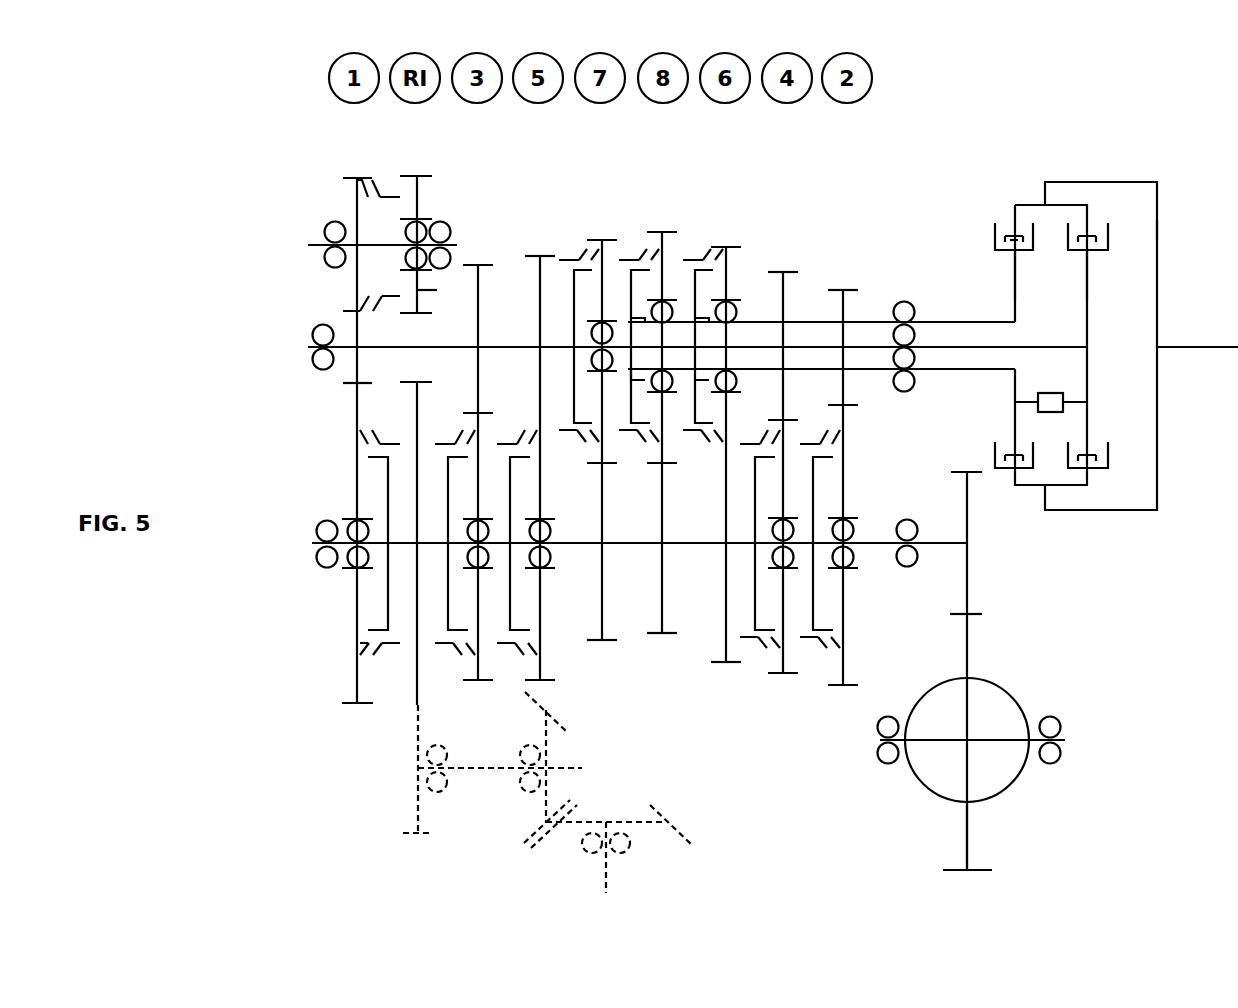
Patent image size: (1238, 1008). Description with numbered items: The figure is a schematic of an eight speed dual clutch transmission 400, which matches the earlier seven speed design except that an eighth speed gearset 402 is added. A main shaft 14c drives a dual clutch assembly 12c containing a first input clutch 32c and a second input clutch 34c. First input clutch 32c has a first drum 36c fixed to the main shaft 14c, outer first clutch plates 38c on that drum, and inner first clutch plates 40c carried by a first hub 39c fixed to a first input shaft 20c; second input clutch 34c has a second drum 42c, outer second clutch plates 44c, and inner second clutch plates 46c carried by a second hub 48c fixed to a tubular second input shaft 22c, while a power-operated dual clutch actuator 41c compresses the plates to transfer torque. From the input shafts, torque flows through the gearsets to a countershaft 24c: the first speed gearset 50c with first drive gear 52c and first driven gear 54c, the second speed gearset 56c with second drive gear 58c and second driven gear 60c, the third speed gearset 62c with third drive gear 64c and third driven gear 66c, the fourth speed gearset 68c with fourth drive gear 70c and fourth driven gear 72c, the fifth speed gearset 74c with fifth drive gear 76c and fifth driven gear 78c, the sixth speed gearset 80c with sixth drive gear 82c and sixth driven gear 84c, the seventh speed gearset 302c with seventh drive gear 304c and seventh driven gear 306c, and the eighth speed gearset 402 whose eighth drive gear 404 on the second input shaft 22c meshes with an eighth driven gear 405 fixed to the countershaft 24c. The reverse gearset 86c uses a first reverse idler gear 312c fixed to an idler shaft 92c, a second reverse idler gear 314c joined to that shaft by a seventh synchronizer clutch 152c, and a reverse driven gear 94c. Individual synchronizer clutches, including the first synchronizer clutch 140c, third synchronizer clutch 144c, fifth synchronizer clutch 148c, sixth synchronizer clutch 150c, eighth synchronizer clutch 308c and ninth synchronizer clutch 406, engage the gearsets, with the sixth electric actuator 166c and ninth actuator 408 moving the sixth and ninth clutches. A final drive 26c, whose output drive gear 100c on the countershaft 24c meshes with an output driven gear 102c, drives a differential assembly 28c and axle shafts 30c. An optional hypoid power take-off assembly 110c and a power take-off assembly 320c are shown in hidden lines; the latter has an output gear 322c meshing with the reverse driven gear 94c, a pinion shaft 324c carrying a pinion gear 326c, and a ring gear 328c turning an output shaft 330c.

The eight speed automatic power shift transmission 400 is at (205, 152).
The first speed gearset 50c is at (343, 168).
The reverse gearset 86c is at (415, 168).
The first reverse idler gear 312c is at (356, 200).
The second reverse idler gear 314c is at (420, 188).
The fifth speed gearset 74c is at (541, 218).
The seventh speed gearset 302c is at (603, 218).
The eighth speed gearset 402 is at (663, 218).
The eighth drive gear 404 is at (668, 240).
The sixth speed gearset 80c is at (726, 225).
The fourth speed gearset 68c is at (784, 250).
The second speed gearset 56c is at (841, 270).
The third speed gearset 62c is at (478, 265).
The idler shaft 92c is at (308, 245).
The fifth drive gear 76c is at (538, 265).
The third drive gear 64c is at (477, 300).
The seventh drive gear 304c is at (600, 291).
The sixth drive gear 82c is at (745, 272).
The fourth drive gear 70c is at (782, 308).
The second drive gear 58c is at (840, 305).
The second input clutch 34c is at (995, 205).
The second drum 42c is at (1020, 203).
The dual clutch assembly 12c is at (1095, 180).
The first drum 36c is at (1108, 205).
The first input clutch 32c is at (1142, 228).
The outer second clutch plates 44c is at (995, 232).
The inner second clutch plates 46c is at (1030, 242).
The second hub 48c is at (1015, 260).
The outer first clutch plates 38c is at (1105, 242).
The inner first clutch plates 40c is at (1080, 242).
The second input shaft 22c is at (935, 322).
The first hub 39c is at (1087, 312).
The main shaft 14c is at (1192, 347).
The first input shaft 20c is at (1073, 347).
The power-operated dual clutch actuator 41c is at (1062, 364).
The seventh synchronizer clutch 152c is at (373, 320).
The ninth actuator 408 is at (643, 323).
The sixth electric actuator 166c is at (700, 369).
The first drive gear 52c is at (343, 383).
The reverse driven gear 94c is at (417, 410).
The third driven gear 66c is at (478, 410).
The first driven gear 54c is at (356, 413).
The fourth driven gear 72c is at (783, 420).
The second driven gear 60c is at (855, 405).
The eighth synchronizer clutch 308c is at (574, 447).
The ninth synchronizer clutch 406 is at (634, 447).
The sixth synchronizer clutch 150c is at (712, 447).
The output drive gear 100c is at (966, 498).
The seventh driven gear 306c is at (604, 577).
The eighth driven gear 405 is at (663, 545).
The fifth driven gear 78c is at (565, 605).
The sixth driven gear 84c is at (725, 630).
The final drive 26c is at (985, 578).
The countershaft 24c is at (950, 545).
The output driven gear 102c is at (968, 635).
The axle shafts 30c is at (1003, 742).
The differential assembly 28c is at (1030, 802).
The hypoid power take-off assembly 110c is at (399, 762).
The first synchronizer clutch 140c is at (388, 660).
The third synchronizer clutch 144c is at (450, 660).
The fifth synchronizer clutch 148c is at (506, 660).
The power take-off assembly 320c is at (623, 792).
The pinion gear 326c is at (547, 740).
The output gear 322c is at (418, 812).
The pinion shaft 324c is at (470, 772).
The ring gear 328c is at (655, 805).
The output shaft 330c is at (606, 875).